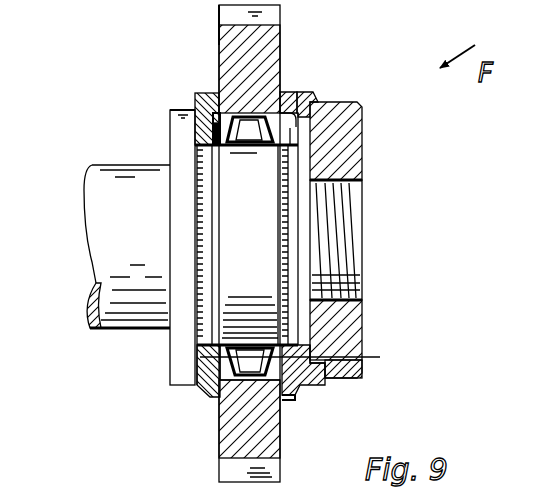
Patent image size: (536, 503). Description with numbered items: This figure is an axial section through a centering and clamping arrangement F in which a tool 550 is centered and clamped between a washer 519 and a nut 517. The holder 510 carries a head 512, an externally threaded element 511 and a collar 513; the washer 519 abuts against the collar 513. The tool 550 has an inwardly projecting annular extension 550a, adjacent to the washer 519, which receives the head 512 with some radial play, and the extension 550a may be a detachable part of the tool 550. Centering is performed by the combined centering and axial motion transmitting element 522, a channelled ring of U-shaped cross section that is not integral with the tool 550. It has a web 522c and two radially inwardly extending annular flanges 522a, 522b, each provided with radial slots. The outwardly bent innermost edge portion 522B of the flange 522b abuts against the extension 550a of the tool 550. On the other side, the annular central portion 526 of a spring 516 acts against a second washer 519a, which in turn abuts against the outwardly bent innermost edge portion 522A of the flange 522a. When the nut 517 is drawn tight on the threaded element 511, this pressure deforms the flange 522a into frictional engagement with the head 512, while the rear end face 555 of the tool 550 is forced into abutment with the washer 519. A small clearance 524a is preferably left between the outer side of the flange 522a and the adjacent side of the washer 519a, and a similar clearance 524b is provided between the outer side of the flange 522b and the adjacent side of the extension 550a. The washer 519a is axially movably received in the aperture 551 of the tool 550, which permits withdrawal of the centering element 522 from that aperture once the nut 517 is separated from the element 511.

The holder 510 is at (84, 335).
The externally threaded element 511 is at (355, 223).
The head 512 is at (252, 241).
The collar 513 is at (180, 145).
The spring 516 is at (323, 390).
The nut 517 is at (363, 325).
The washer 519 is at (203, 93).
The second washer 519a is at (290, 403).
The combined centering and axial motion transmitting element 522 is at (262, 385).
The outwardly bent innermost edge portion 522A is at (272, 150).
The outwardly bent innermost edge portion 522B is at (233, 342).
The annular flange 522a is at (315, 100).
The annular flange 522b is at (197, 383).
The web 522c is at (250, 113).
The clearance 524a is at (310, 361).
The clearance 524b is at (200, 358).
The annular central portion 526 is at (363, 117).
The tool 550 is at (286, 50).
The inwardly projecting annular extension 550a is at (197, 108).
The aperture 551 is at (283, 110).
The rear end face 555 is at (217, 40).